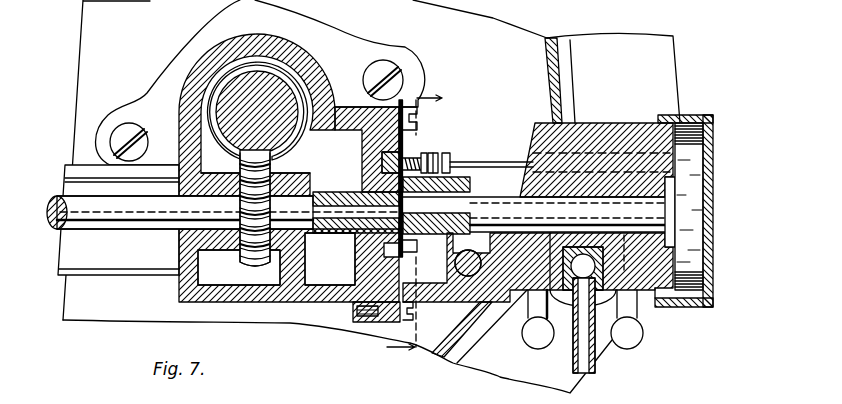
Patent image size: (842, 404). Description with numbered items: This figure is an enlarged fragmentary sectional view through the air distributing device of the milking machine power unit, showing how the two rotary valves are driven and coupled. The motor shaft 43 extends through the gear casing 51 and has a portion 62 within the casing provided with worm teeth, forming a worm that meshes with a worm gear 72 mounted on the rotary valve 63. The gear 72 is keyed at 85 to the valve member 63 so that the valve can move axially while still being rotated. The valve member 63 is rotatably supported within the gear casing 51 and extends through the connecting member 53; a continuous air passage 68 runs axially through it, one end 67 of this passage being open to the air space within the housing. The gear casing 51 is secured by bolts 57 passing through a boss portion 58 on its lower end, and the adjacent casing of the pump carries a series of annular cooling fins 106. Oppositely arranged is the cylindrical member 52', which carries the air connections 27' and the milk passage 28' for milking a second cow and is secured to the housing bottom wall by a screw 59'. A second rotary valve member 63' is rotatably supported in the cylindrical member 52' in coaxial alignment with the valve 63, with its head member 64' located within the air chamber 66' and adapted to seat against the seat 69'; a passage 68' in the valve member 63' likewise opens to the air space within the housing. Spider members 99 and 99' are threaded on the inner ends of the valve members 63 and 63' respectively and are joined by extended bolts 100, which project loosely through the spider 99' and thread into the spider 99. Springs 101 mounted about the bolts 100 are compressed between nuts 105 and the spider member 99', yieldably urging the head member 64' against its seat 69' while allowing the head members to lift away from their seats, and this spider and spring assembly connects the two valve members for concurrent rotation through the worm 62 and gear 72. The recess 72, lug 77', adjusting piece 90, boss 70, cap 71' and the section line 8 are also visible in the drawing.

The section line 8- 8 is at (403, 215).
The air connections 27' is at (597, 331).
The milk passage 28' is at (598, 314).
The motor shaft 43 is at (257, 70).
The gear casing 51 is at (207, 50).
The cylindrical member 52' is at (596, 139).
The connecting member 53 is at (108, 270).
The bolts 57 is at (127, 125).
The boss portion 58 is at (338, 38).
The screw 59' is at (538, 298).
The worm 62 is at (303, 137).
The rotary valve 63 is at (228, 224).
The rotary valve member 63' is at (539, 209).
The head member 64' is at (713, 206).
The air chamber 66' is at (704, 103).
The end of passage 67 is at (366, 240).
The air passage 68 is at (206, 225).
The passage 68' is at (444, 213).
The seat 69' is at (693, 311).
The bearing boss 70 is at (232, 173).
The cap 71' is at (703, 211).
The worm gear 72 is at (248, 258).
The lug 77' is at (526, 285).
The key 85 is at (240, 211).
The adjusting screw 90 is at (357, 296).
The spider member 99 is at (376, 149).
The spider member 99' is at (447, 263).
The bolts 100 is at (404, 150).
The springs 101 is at (428, 155).
The nuts 105 is at (452, 160).
The cooling fins 106 is at (667, 62).